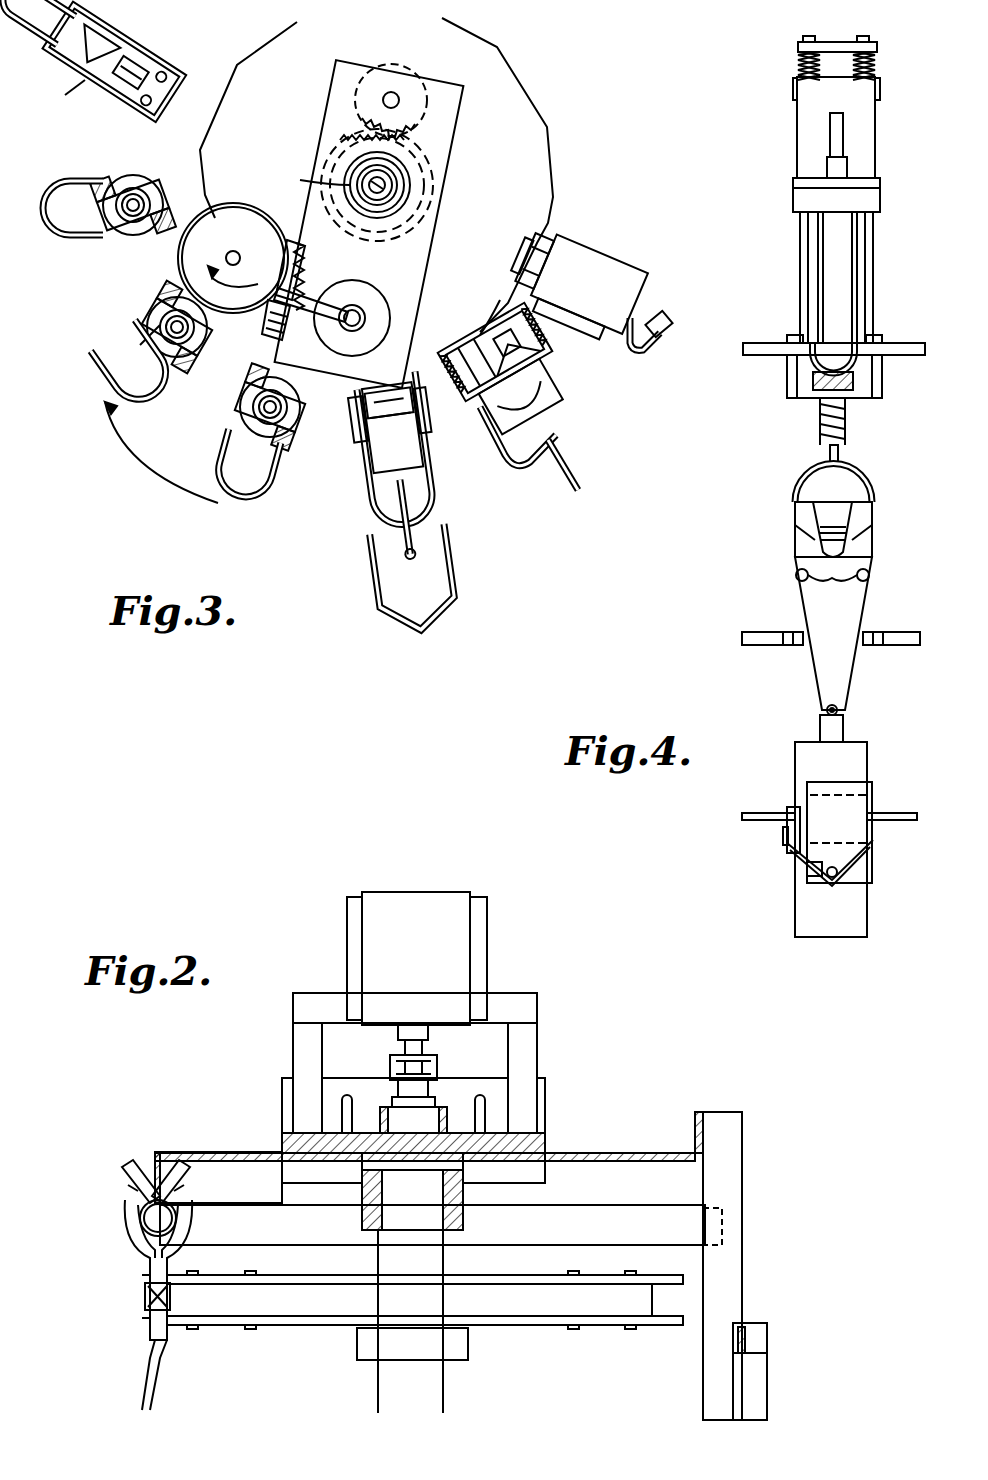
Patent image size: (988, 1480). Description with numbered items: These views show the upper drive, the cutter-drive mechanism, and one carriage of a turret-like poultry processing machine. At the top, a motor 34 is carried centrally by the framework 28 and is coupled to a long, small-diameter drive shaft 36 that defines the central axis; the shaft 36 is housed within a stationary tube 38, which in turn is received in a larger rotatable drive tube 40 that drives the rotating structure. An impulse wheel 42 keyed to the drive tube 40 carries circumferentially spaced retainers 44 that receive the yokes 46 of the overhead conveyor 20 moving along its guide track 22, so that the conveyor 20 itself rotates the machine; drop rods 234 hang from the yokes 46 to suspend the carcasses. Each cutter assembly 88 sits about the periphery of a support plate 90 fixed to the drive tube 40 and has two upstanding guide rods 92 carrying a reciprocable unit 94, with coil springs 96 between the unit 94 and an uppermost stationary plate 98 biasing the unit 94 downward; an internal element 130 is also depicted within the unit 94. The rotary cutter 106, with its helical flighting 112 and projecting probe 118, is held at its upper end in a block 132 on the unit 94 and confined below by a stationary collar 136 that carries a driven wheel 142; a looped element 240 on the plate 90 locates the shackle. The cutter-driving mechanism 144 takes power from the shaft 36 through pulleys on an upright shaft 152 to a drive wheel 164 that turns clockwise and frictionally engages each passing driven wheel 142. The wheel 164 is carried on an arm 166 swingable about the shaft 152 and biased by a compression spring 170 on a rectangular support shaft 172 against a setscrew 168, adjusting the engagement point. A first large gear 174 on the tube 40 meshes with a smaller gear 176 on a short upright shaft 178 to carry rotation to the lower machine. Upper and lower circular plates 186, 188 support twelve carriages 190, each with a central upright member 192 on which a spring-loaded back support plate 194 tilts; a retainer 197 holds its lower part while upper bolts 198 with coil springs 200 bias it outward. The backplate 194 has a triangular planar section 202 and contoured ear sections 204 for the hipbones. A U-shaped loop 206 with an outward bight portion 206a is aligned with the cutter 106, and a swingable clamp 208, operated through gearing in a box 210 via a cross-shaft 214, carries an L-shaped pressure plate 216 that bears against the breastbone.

In FIG. 2, the overhead conveyor 20 is at (135, 1262).
In FIG. 2, the guide track 22 is at (140, 1210).
In FIG. 2, the framework 28 is at (748, 1170).
In FIG. 2, the motor 34 is at (388, 902).
In FIG. 3, the drive shaft 36 is at (387, 185).
In FIG. 2, the drive shaft 36 is at (435, 1115).
In FIG. 3, the stationary tube 38 is at (300, 180).
In FIG. 2, the stationary tube 38 is at (390, 1105).
In FIG. 3, the rotatable drive tube 40 is at (403, 200).
In FIG. 2, the rotatable drive tube 40 is at (430, 1385).
In FIG. 2, the impulse wheel 42 is at (552, 1312).
In FIG. 2, the retainers 44 is at (287, 1312).
In FIG. 2, the yokes 46 is at (125, 1225).
In FIG. 4, the cutter assembly 88 is at (885, 140).
In FIG. 4, the support plate 90 is at (912, 345).
In FIG. 4, the guide rods 92 is at (800, 248).
In FIG. 4, the unit 94 is at (800, 110).
In FIG. 4, the coil springs 96 is at (798, 62).
In FIG. 4, the stationary plate 98 is at (850, 36).
In FIG. 3, the rotary cutter 106 is at (182, 352).
In FIG. 4, the rotary cutter 106 is at (855, 255).
In FIG. 4, the helical flighting 112 is at (820, 425).
In FIG. 4, the probe 118 is at (840, 455).
In FIG. 4, the piston rod 130 is at (832, 125).
In FIG. 4, the block 132 is at (872, 197).
In FIG. 3, the collar 136 is at (158, 285).
In FIG. 4, the collar 136 is at (872, 368).
In FIG. 3, the driven wheel 142 is at (138, 345).
In FIG. 4, the driven wheel 142 is at (853, 385).
In FIG. 3, the driving mechanism 144 is at (230, 182).
In FIG. 3, the upright shaft 152 is at (360, 312).
In FIG. 3, the drive wheel 164 is at (243, 205).
In FIG. 3, the arm 166 is at (310, 292).
In FIG. 3, the setscrew 168 is at (272, 336).
In FIG. 3, the compression spring 170 is at (294, 238).
In FIG. 3, the support shaft 172 is at (333, 78).
In FIG. 3, the first large gear 174 is at (415, 154).
In FIG. 3, the smaller gear 176 is at (390, 70).
In FIG. 3, the upright shaft 178 is at (396, 96).
In FIG. 3, the upper circular plate 186 is at (527, 110).
In FIG. 4, the upper circular plate 186 is at (757, 630).
In FIG. 4, the lower circular plate 188 is at (757, 812).
In FIG. 3, the carriage 190 is at (200, 38).
In FIG. 4, the carriage 190 is at (790, 668).
In FIG. 3, the upright member 192 is at (535, 255).
In FIG. 4, the upright member 192 is at (843, 725).
In FIG. 3, the back support plate 194 is at (545, 385).
In FIG. 4, the back support plate 194 is at (858, 664).
In FIG. 3, the retainer 197 is at (530, 420).
In FIG. 4, the retainer 197 is at (826, 708).
In FIG. 3, the upper horizontal bolts 198 is at (445, 345).
In FIG. 4, the upper horizontal bolts 198 is at (832, 583).
In FIG. 3, the coil springs 200 is at (520, 352).
In FIG. 4, the planar section 202 is at (860, 612).
In FIG. 4, the ear sections 204 is at (800, 515).
In FIG. 3, the U-shaped loop 206 is at (110, 350).
In FIG. 4, the U-shaped loop 206 is at (862, 485).
In FIG. 3, the bight portion 206a is at (380, 525).
In FIG. 4, the bight portion 206a is at (822, 478).
In FIG. 3, the swingable clamp 208 is at (648, 392).
In FIG. 4, the swingable clamp 208 is at (782, 868).
In FIG. 3, the box 210 is at (625, 262).
In FIG. 4, the box 210 is at (860, 792).
In FIG. 3, the cross-shaft 214 is at (604, 240).
In FIG. 4, the cross-shaft 214 is at (783, 840).
In FIG. 3, the pressure plate 216 is at (430, 620).
In FIG. 4, the pressure plate 216 is at (850, 870).
In FIG. 2, the drop rods 234 is at (148, 1382).
In FIG. 4, the looped element 240 is at (810, 360).